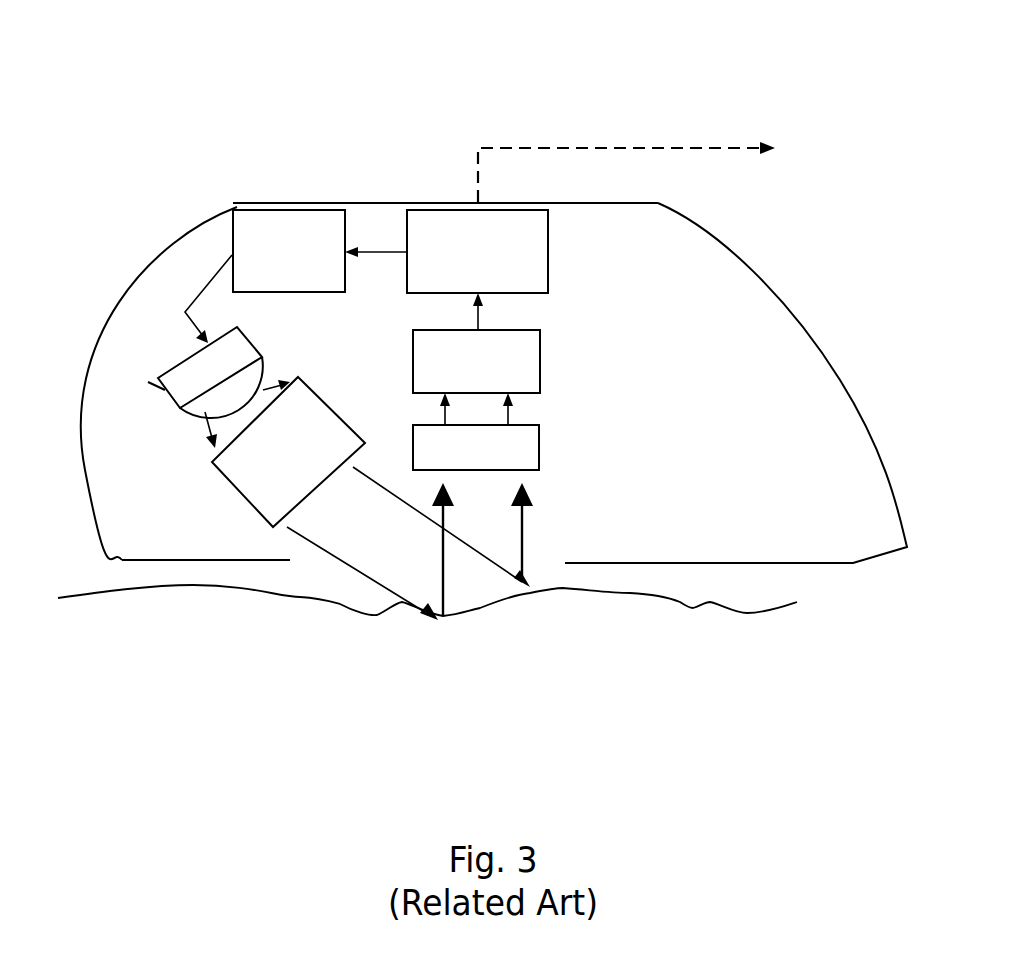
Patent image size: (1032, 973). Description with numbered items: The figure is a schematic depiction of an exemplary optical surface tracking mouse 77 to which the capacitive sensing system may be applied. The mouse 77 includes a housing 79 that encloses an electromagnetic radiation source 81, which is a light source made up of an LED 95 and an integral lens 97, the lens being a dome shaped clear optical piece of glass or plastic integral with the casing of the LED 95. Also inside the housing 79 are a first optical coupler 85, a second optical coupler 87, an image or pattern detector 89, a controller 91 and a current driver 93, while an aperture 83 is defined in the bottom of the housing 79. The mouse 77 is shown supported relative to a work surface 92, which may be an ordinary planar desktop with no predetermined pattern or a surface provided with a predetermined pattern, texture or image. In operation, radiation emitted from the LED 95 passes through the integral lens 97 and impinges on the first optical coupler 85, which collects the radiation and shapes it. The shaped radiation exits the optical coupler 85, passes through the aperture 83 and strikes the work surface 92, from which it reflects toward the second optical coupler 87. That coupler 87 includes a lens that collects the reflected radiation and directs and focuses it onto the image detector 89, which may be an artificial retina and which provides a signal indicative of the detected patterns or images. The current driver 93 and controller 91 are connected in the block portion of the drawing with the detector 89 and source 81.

The optical surface tracking mouse 77 is at (477, 85).
The housing 79 is at (793, 297).
The electromagnetic radiation source 81 is at (182, 338).
The aperture 83 is at (327, 565).
The first optical coupler 85 is at (288, 452).
The second optical coupler 87 is at (476, 431).
The image or pattern detector 89 is at (476, 343).
The controller 91 is at (446, 251).
The work surface 92 is at (373, 617).
The current driver 93 is at (265, 276).
The LED 95 is at (153, 377).
The integral lens 97 is at (208, 410).